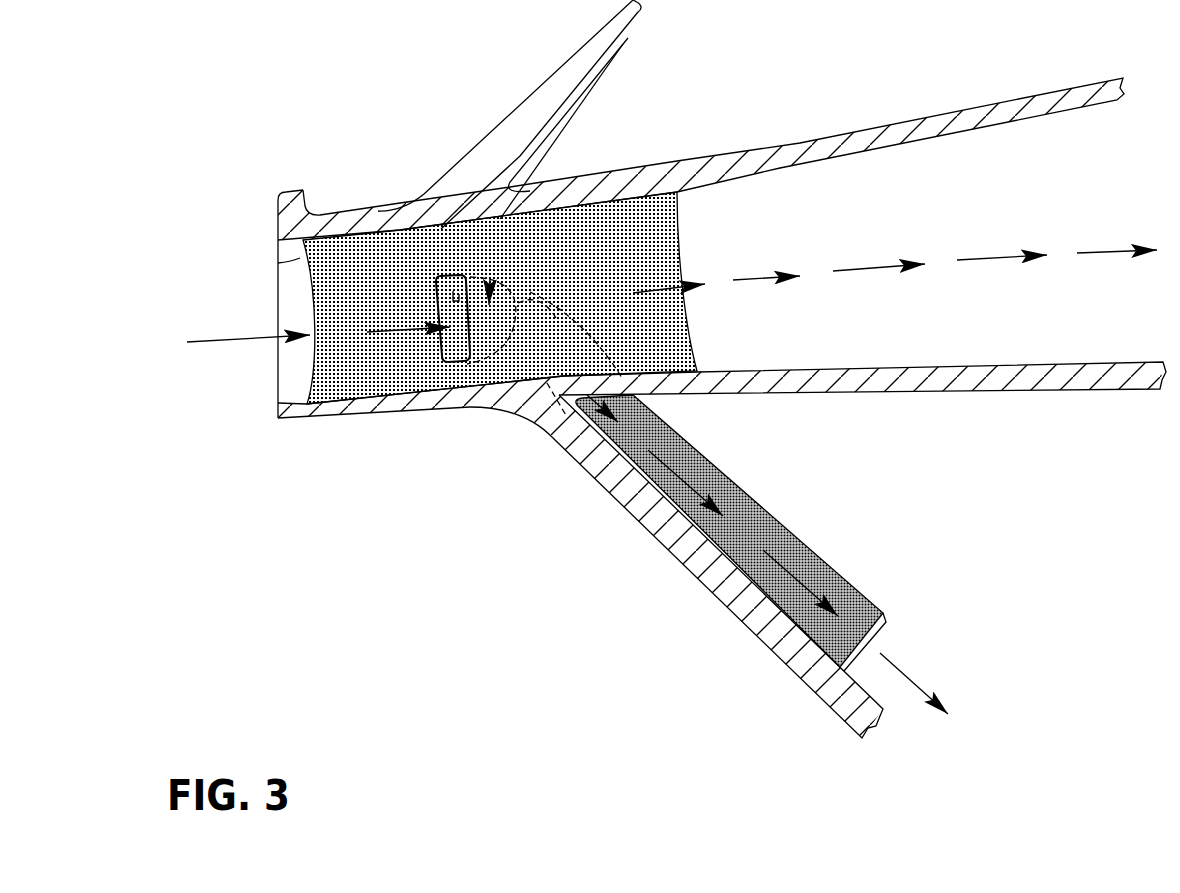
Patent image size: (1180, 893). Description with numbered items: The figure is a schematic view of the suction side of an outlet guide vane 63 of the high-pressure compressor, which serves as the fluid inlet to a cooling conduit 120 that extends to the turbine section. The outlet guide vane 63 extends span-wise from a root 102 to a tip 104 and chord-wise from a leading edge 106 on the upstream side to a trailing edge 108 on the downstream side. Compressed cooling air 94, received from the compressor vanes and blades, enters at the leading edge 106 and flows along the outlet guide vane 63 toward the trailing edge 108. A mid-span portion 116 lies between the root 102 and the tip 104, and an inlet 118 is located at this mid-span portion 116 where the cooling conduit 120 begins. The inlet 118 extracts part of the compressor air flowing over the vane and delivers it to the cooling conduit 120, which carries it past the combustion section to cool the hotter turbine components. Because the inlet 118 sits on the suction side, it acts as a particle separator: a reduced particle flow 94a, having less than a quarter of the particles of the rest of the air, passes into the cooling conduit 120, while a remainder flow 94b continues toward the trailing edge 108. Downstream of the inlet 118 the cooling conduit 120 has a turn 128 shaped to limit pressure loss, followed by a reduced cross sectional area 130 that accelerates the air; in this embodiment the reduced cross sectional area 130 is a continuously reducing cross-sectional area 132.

The outlet guide vane 63 is at (395, 72).
The cooling air 94 is at (247, 347).
The reduced particle flow 94a is at (700, 483).
The remainder flow 94b is at (867, 270).
The root 102 is at (372, 400).
The tip 104 is at (400, 213).
The leading edge 106 is at (278, 262).
The trailing edge 108 is at (680, 240).
The mid-span portion 116 is at (452, 262).
The inlet 118 is at (445, 270).
The cooling conduit 120 is at (822, 553).
The turn 128 is at (495, 395).
The reduced cross sectional area 130 is at (488, 275).
The continuously reducing cross-sectional area 132 is at (520, 330).